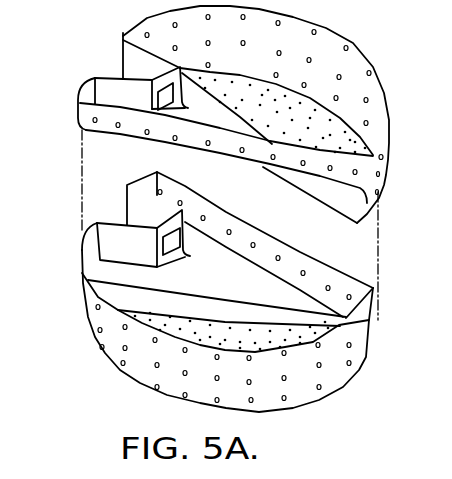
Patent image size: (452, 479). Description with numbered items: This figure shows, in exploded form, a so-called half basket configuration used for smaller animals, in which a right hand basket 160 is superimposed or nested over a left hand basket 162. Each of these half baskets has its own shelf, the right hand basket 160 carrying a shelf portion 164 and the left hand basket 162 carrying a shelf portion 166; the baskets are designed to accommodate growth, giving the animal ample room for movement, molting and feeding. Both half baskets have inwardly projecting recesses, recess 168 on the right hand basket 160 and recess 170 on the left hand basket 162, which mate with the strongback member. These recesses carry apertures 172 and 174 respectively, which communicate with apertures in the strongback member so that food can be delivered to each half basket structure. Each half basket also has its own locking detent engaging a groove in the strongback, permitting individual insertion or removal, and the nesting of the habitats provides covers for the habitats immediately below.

The right hand basket 160 is at (373, 32).
The left hand basket 162 is at (147, 333).
The shelf portion 164 is at (197, 122).
The shelf portion 166 is at (241, 275).
The inwardly projecting recess 168 is at (131, 66).
The inwardly projecting recess 170 is at (200, 225).
The aperture 172 is at (173, 84).
The aperture 174 is at (170, 237).